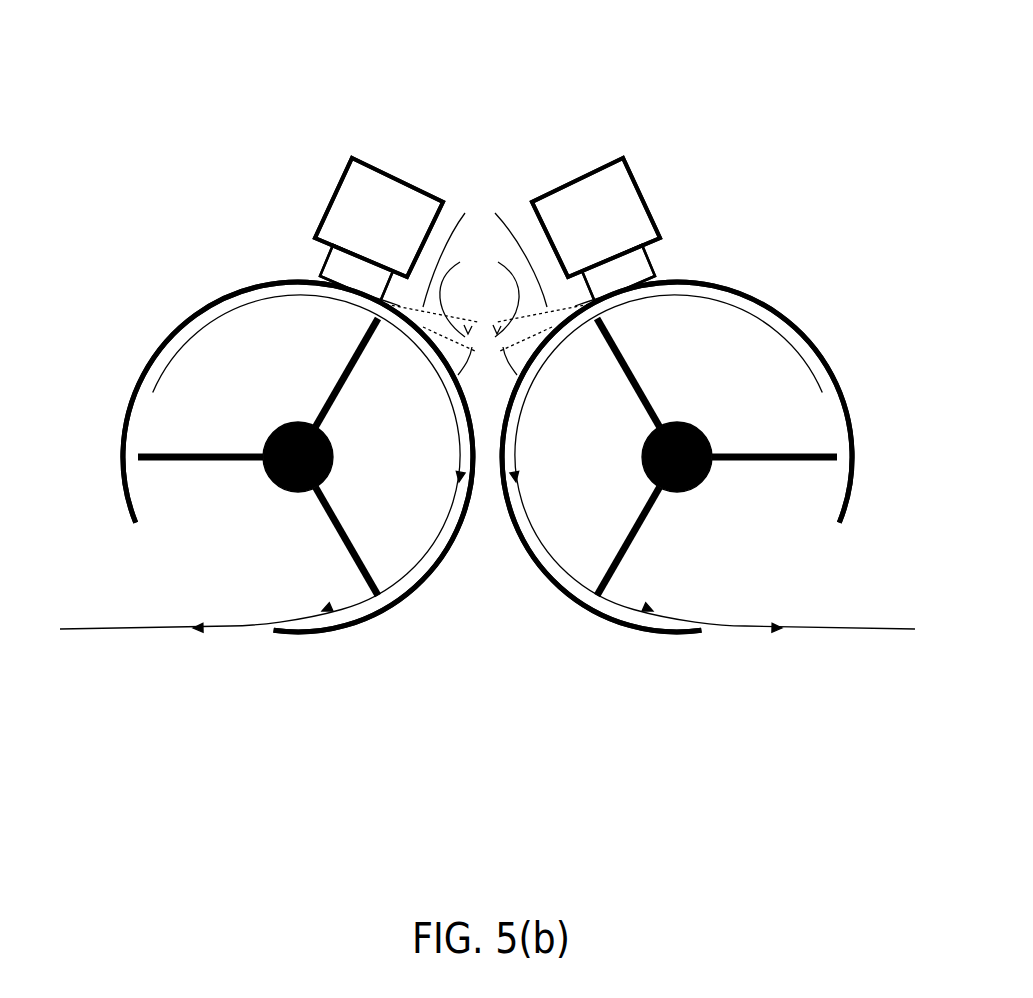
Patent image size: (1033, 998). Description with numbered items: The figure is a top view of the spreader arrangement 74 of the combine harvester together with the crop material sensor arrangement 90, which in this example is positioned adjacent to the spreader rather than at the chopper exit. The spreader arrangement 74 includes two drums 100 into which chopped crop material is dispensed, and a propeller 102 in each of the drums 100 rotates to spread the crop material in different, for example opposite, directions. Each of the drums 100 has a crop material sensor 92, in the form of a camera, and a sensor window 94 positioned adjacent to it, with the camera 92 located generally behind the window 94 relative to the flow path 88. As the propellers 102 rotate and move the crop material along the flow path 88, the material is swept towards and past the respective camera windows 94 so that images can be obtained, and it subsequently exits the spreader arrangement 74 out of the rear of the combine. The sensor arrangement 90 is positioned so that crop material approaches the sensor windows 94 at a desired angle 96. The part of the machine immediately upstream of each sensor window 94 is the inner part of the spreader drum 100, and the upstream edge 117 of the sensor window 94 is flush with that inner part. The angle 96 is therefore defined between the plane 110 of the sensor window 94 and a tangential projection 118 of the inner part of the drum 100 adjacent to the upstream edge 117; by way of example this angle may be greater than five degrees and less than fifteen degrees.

The spreader arrangement 74 is at (448, 697).
The flow path 88 is at (230, 627).
The crop material sensor arrangement 90 is at (408, 168).
The crop material sensor 92 is at (333, 193).
The sensor window 94 is at (318, 278).
The angle 96 is at (479, 308).
The drums 100 is at (158, 347).
The propellers 102 is at (150, 458).
The plane of the sensor window 110 is at (487, 427).
The upstream edge of the sensor window 117 is at (313, 282).
The tangential projection 118 is at (487, 271).